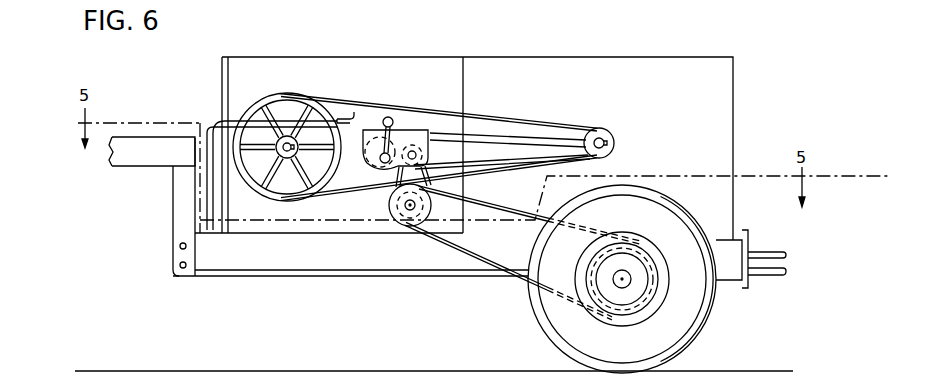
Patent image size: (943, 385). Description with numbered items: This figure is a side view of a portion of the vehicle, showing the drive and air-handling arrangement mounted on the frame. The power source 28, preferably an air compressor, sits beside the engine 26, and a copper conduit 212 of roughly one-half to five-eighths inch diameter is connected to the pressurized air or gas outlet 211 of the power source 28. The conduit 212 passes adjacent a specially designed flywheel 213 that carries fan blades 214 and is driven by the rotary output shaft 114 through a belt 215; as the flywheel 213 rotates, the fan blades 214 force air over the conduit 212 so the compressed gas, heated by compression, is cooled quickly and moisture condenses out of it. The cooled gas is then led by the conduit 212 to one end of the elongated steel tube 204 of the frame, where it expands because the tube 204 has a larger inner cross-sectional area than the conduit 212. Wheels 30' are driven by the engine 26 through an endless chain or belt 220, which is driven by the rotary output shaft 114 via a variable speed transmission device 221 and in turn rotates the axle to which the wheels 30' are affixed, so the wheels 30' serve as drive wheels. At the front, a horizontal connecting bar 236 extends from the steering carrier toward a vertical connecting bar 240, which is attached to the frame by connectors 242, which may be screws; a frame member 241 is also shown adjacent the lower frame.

The engine 26 is at (535, 58).
The power source 28 is at (430, 57).
The wheels 30' is at (657, 279).
The rotary output shaft 114 is at (611, 131).
The elongated steel tube 204 is at (440, 280).
The pressurized air or gas outlet 211 is at (343, 112).
The copper conduit 212 is at (207, 120).
The flywheel 213 is at (280, 97).
The fan blades 214 is at (307, 110).
The belt 215 is at (390, 107).
The endless chain or belt 220 is at (500, 262).
The variable speed transmission device 221 is at (364, 178).
The horizontal connecting bar 236 is at (138, 160).
The vertical connecting bar 240 is at (177, 222).
The frame rail 241 is at (380, 286).
The connectors 242 is at (180, 250).